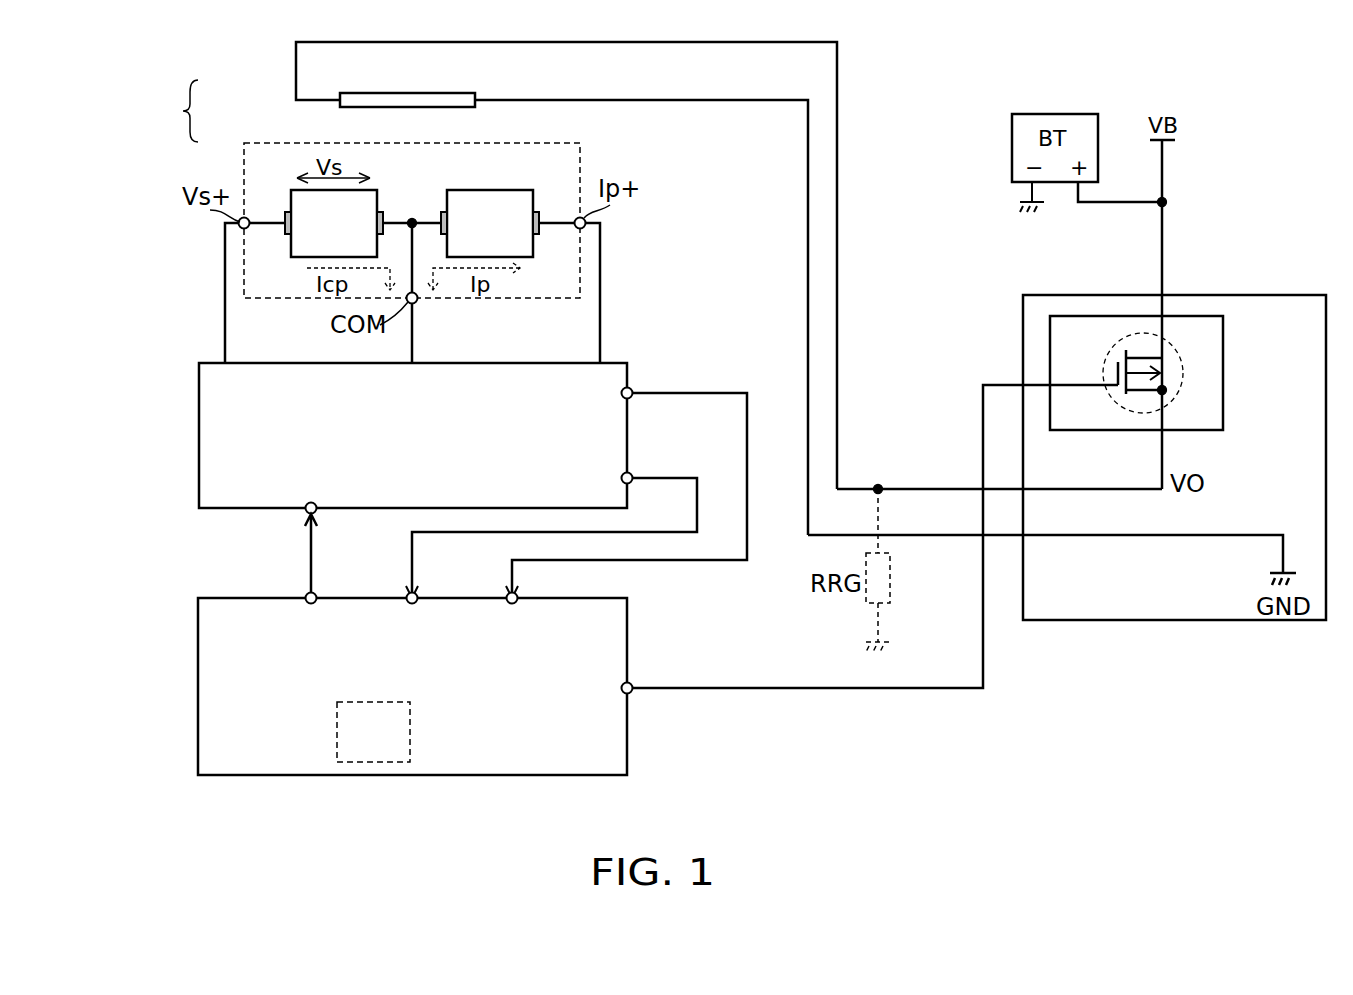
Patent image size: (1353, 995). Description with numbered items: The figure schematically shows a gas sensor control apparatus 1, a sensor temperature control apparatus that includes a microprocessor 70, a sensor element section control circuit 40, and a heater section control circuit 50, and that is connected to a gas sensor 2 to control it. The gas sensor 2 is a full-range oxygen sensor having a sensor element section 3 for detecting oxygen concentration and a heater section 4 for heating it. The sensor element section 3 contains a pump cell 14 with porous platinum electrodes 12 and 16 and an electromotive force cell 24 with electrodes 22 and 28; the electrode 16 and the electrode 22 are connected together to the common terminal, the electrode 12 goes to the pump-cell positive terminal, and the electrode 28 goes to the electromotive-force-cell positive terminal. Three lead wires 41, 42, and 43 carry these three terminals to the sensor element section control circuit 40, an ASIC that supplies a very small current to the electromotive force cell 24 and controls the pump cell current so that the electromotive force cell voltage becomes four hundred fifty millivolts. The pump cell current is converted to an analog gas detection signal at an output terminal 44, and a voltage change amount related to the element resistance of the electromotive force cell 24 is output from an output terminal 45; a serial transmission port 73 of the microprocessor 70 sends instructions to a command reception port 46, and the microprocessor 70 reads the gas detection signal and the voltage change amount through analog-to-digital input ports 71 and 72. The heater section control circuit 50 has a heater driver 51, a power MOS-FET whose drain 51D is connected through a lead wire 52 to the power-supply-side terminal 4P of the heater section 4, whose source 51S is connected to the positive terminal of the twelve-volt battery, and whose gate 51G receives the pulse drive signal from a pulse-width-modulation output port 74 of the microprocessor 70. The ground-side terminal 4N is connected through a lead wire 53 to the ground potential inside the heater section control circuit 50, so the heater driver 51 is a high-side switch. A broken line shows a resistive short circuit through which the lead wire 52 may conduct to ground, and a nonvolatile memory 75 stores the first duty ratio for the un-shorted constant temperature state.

The gas sensor control apparatus 1 is at (1123, 710).
The gas sensor 2 is at (185, 111).
The sensor element section 3 is at (275, 143).
The heater section 4 is at (344, 104).
The power-supply-side terminal 4P is at (566, 265).
The ground-side terminal 4N is at (640, 301).
The electrode 12 is at (538, 212).
The pump cell 14 is at (528, 248).
The electrode 16 is at (443, 212).
The electrode 22 is at (382, 212).
The electromotive force cell 24 is at (288, 212).
The electrode 28 is at (288, 238).
The sensor element section control circuit 40 is at (199, 432).
The lead wire 41 is at (225, 303).
The lead wire 42 is at (600, 300).
The lead wire 43 is at (412, 337).
The output terminal 44 is at (630, 388).
The output terminal 45 is at (632, 482).
The command reception port 46 is at (307, 514).
The heater section control circuit 50 is at (1215, 620).
The heater driver 51 is at (1173, 373).
The gate 51G is at (1085, 373).
The source 51S is at (1170, 342).
The drain 51D is at (1171, 408).
The lead wire 52 is at (940, 489).
The lead wire 53 is at (935, 535).
The microprocessor 70 is at (198, 688).
The A/D input port 71 is at (506, 595).
The A/D input port 72 is at (406, 595).
The serial transmission port 73 is at (306, 595).
The PWM output port 74 is at (630, 682).
The nonvolatile memory 75 is at (337, 738).